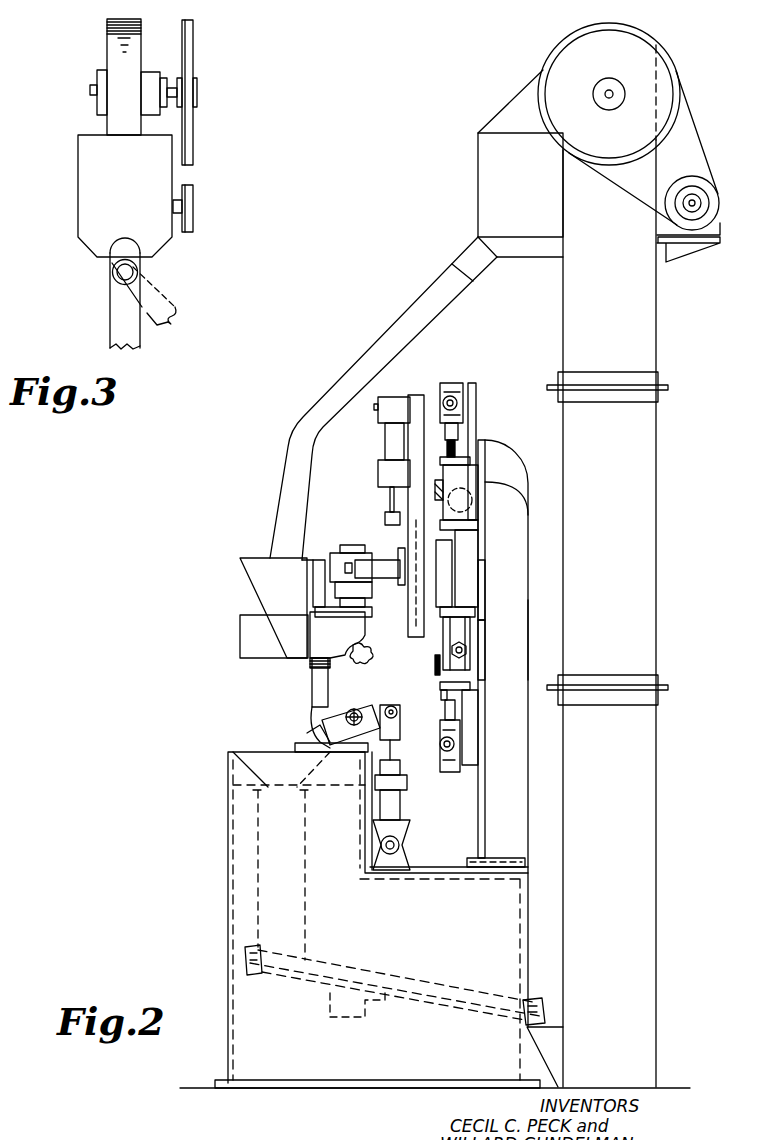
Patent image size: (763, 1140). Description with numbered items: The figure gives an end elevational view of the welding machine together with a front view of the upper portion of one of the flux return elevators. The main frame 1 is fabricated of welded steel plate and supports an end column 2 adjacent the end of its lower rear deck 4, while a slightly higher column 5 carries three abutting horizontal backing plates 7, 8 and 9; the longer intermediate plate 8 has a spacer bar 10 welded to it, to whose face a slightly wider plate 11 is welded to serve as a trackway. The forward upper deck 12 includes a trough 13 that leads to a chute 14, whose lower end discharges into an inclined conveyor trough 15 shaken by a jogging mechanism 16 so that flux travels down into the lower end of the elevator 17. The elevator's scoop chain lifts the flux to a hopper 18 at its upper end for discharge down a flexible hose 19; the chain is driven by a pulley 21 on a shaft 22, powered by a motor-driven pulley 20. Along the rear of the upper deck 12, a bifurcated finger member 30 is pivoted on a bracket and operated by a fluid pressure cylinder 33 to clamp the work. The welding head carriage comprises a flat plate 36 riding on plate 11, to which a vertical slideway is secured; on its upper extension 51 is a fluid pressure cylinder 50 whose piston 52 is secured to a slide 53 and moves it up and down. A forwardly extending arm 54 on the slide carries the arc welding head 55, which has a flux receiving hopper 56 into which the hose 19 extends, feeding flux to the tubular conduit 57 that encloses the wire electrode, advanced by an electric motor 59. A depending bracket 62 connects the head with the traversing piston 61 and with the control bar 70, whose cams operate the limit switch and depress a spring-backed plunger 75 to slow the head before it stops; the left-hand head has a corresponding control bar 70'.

In FIG. 2, the main frame 1 is at (228, 910).
In FIG. 2, the end column 2 is at (512, 640).
In FIG. 2, the lower rear deck 4 is at (433, 867).
In FIG. 2, the column 5 is at (500, 462).
In FIG. 2, the backing plate 7 is at (485, 510).
In FIG. 2, the intermediate backing plate 8 is at (480, 592).
In FIG. 2, the backing plate 9 is at (480, 650).
In FIG. 2, the spacer bar 10 is at (470, 578).
In FIG. 2, the plate 11 is at (457, 567).
In FIG. 2, the forward upper deck 12 is at (258, 750).
In FIG. 2, the trough 13 is at (240, 768).
In FIG. 2, the chute 14 is at (252, 830).
In FIG. 2, the inclined conveyor trough 15 is at (333, 978).
In FIG. 2, the jogging mechanism 16 is at (372, 1015).
In FIG. 3, the elevator 17 is at (108, 303).
In FIG. 2, the elevator 17 is at (637, 1006).
In FIG. 3, the hopper 18 is at (82, 160).
In FIG. 2, the hopper 18 is at (483, 160).
In FIG. 3, the flexible hose 19 is at (184, 303).
In FIG. 2, the flexible hose 19 is at (400, 320).
In FIG. 3, the motor-driven pulley 20 is at (193, 205).
In FIG. 2, the motor-driven pulley 20 is at (688, 180).
In FIG. 3, the pulley 21 is at (193, 57).
In FIG. 2, the pulley 21 is at (548, 57).
In FIG. 3, the shaft 22 is at (91, 90).
In FIG. 2, the shaft 22 is at (609, 90).
In FIG. 2, the bifurcated finger member 30 is at (372, 717).
In FIG. 2, the cylinder 33 is at (400, 802).
In FIG. 2, the flat plate 36 is at (428, 643).
In FIG. 2, the fluid pressure cylinder 50 is at (380, 434).
In FIG. 2, the upper extension 51 is at (422, 405).
In FIG. 2, the piston 52 is at (388, 507).
In FIG. 2, the slide 53 is at (420, 635).
In FIG. 2, the forwardly extending arm 54 is at (380, 572).
In FIG. 2, the arc welding head 55 is at (317, 637).
In FIG. 2, the flux receiving hopper 56 is at (253, 582).
In FIG. 2, the tubular conduit 57 is at (310, 690).
In FIG. 2, the electric motor 59 is at (347, 548).
In FIG. 2, the piston 61 is at (462, 655).
In FIG. 2, the depending bracket 62 is at (462, 637).
In FIG. 2, the control bar 70 is at (478, 713).
In FIG. 2, the control bar 70' is at (483, 424).
In FIG. 2, the spring-backed plunger 75 is at (440, 717).